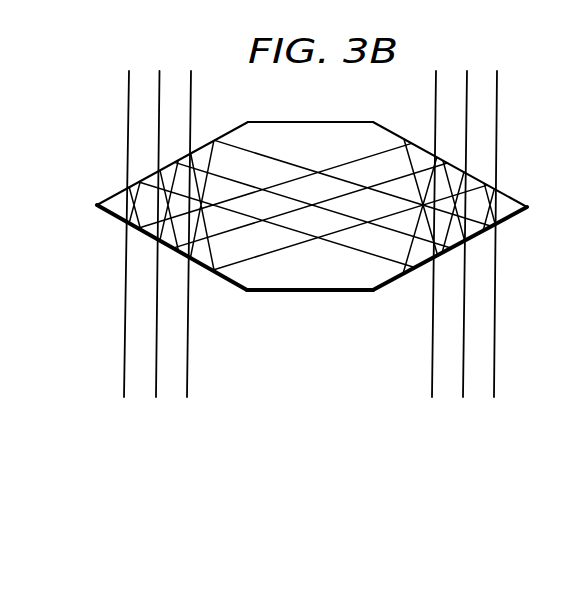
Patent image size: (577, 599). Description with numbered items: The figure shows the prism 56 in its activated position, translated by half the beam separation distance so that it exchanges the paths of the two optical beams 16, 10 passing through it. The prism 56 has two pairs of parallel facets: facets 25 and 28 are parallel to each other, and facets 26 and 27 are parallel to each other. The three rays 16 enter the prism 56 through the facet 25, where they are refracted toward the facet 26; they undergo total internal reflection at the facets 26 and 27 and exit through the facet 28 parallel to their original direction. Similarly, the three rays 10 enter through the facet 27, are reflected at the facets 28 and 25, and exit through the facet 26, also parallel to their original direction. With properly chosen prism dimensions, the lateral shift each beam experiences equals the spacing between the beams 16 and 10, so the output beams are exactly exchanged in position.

The optical beam path 10 is at (494, 330).
The optical beam path 16 is at (187, 345).
The facet 25 is at (230, 280).
The facet 26 is at (228, 132).
The facet 27 is at (387, 283).
The facet 28 is at (397, 134).
The prism 56 is at (312, 212).